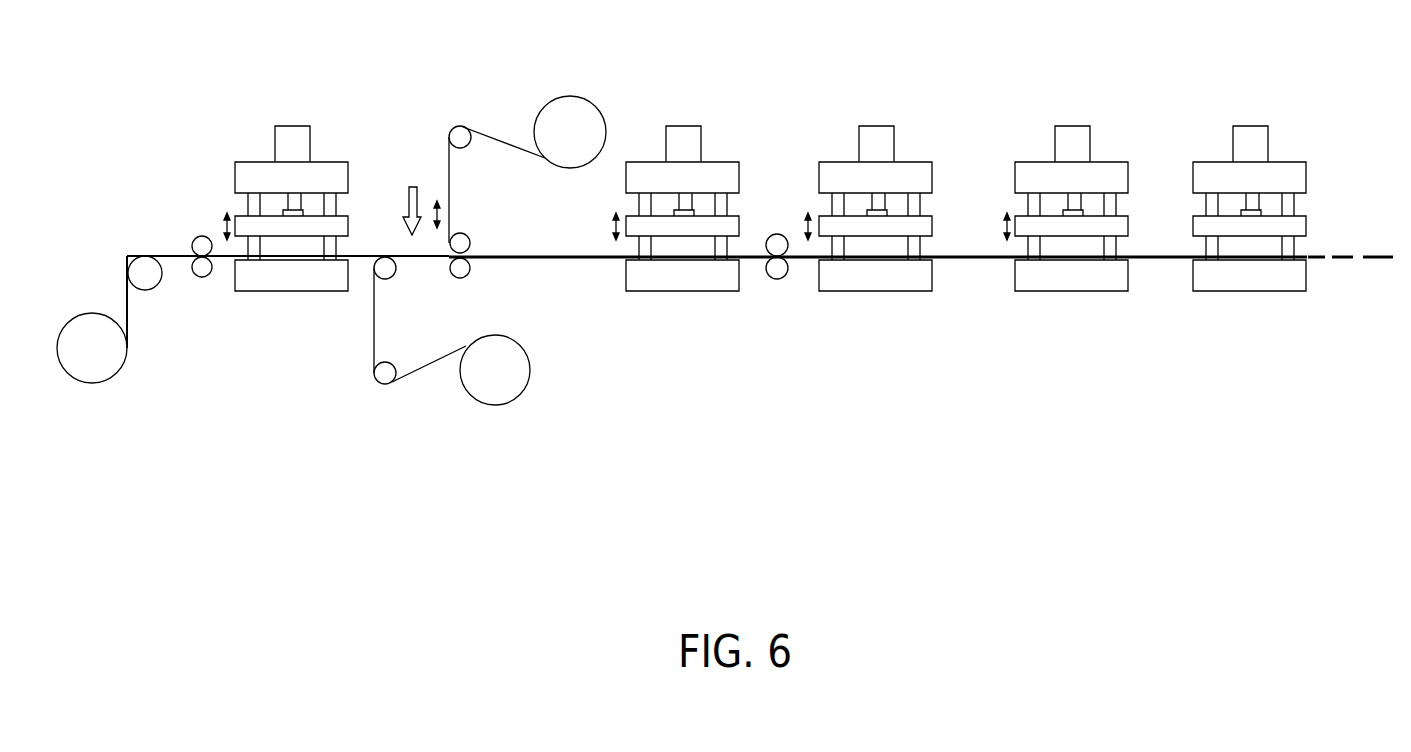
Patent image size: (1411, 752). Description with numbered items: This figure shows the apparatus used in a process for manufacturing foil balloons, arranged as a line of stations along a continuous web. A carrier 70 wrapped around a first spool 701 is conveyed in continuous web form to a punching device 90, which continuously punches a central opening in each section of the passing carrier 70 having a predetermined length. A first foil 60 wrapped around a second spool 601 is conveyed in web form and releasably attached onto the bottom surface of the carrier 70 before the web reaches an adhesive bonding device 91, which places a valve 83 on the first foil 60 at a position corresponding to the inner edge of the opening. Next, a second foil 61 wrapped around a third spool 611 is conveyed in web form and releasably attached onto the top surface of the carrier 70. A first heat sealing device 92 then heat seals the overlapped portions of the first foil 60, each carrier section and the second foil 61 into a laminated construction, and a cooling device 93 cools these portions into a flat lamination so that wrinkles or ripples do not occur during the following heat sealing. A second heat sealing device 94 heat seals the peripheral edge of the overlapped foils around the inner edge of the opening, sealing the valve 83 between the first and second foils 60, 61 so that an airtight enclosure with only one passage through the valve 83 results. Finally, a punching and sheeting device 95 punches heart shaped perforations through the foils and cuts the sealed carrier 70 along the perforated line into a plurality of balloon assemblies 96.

The first foil 60 is at (418, 373).
The second spool 601 is at (541, 393).
The second foil 61 is at (513, 148).
The third spool 611 is at (571, 94).
The carrier 70 is at (137, 308).
The first spool 701 is at (93, 386).
The valve 83 is at (418, 233).
The punching device 90 is at (334, 142).
The adhesive bonding device 91 is at (412, 170).
The first heat sealing device 92 is at (734, 154).
The cooling device 93 is at (930, 154).
The second heat sealing device 94 is at (1126, 154).
The punching and sheeting device 95 is at (1303, 152).
The balloon assembly 96 is at (1374, 244).